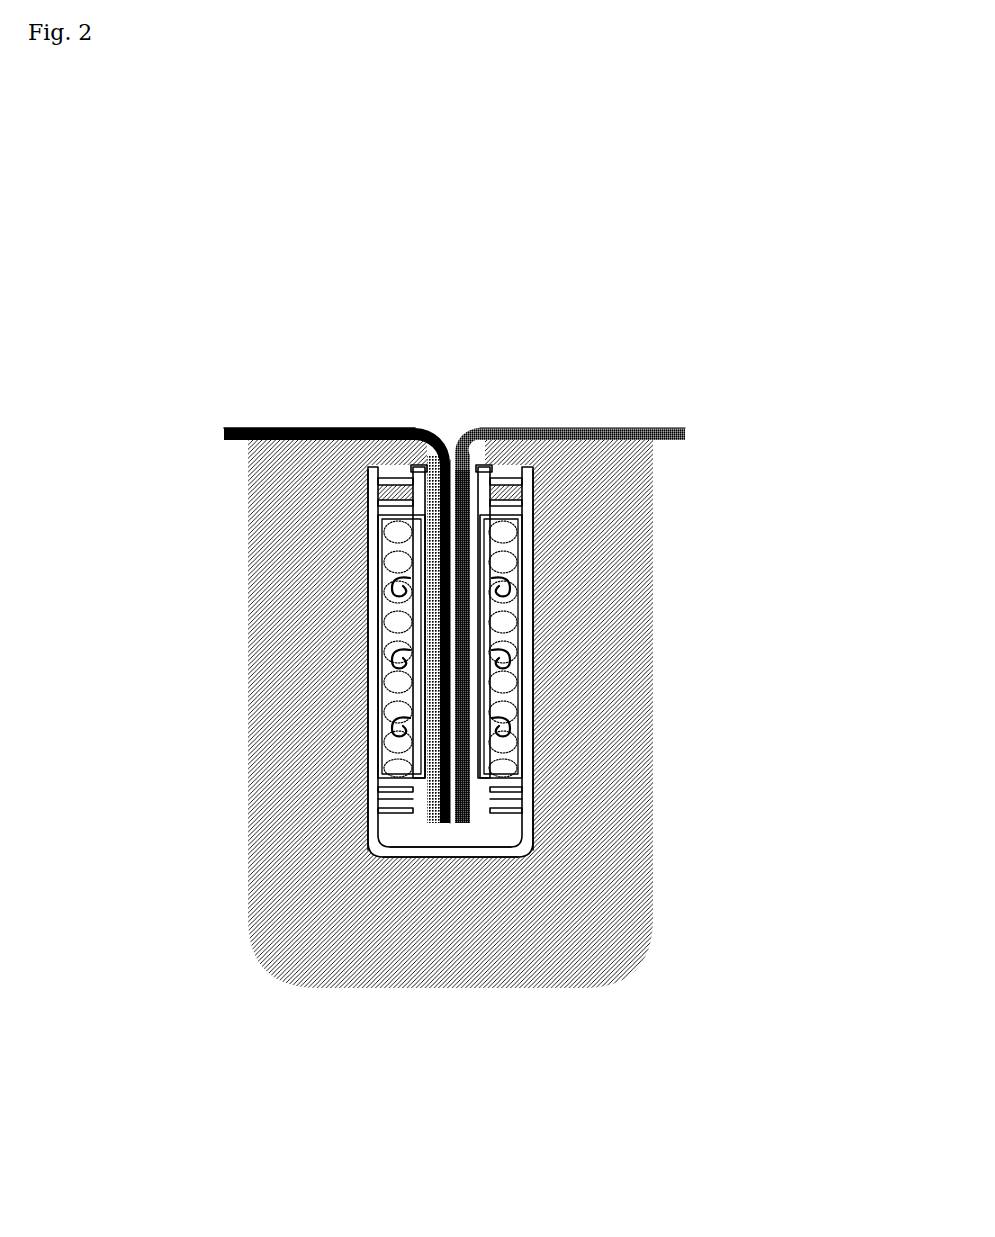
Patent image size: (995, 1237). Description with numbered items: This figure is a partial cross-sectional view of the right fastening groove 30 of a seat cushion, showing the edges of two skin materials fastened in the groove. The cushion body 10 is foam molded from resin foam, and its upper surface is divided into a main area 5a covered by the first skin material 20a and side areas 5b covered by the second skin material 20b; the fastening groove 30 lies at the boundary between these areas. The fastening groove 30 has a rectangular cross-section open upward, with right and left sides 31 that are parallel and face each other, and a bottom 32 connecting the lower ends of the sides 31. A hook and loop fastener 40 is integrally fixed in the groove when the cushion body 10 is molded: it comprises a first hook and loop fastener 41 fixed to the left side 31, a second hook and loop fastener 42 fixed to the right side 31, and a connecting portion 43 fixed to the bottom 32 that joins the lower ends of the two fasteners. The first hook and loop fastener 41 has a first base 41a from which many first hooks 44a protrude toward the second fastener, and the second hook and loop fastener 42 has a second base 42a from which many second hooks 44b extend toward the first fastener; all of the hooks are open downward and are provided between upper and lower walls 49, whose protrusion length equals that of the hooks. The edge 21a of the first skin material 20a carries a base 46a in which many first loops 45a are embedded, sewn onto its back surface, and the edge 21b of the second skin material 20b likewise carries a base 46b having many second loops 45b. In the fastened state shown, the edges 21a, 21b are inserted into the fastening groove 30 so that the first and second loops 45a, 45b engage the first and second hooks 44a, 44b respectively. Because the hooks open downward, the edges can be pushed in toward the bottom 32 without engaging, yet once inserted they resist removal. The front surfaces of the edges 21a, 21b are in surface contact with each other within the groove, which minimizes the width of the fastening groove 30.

The cushion body 10 is at (598, 897).
The first skin material 20a is at (258, 428).
The second skin material 20b is at (645, 428).
The main area 5a is at (287, 428).
The side area 5b is at (575, 428).
The fastening groove 30 is at (472, 455).
The edge of the first skin material 21a is at (440, 570).
The edge of the second skin material 21b is at (462, 553).
The hook and loop fastener 40 is at (370, 722).
The first hook and loop fastener 41 is at (368, 695).
The second hook and loop fastener 42 is at (535, 703).
The first base 41a is at (372, 757).
The second base 42a is at (528, 752).
The side 31 is at (370, 674).
The bottom 32 is at (538, 684).
The connecting portion 43 is at (448, 857).
The first hook 44a is at (385, 623).
The second hook 44b is at (520, 612).
The first loop 45a is at (392, 562).
The second loop 45b is at (520, 742).
The base 46a is at (430, 525).
The base 46b is at (522, 793).
The wall 49 is at (520, 500).